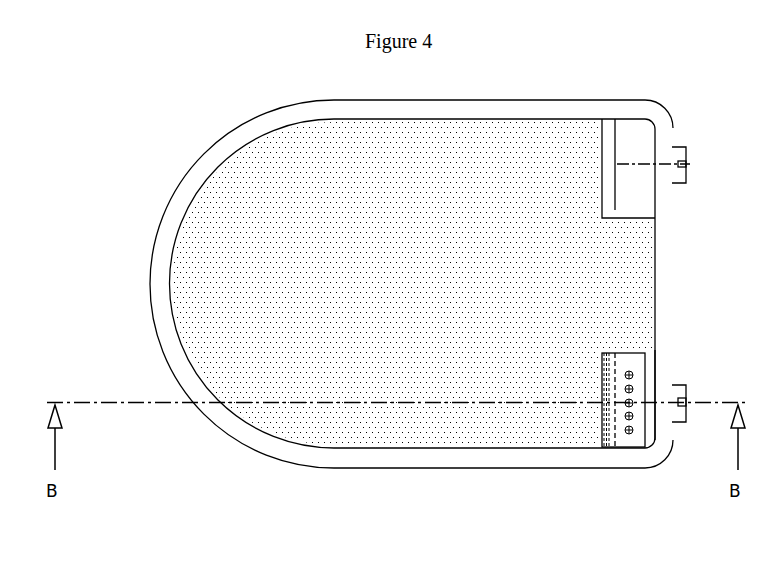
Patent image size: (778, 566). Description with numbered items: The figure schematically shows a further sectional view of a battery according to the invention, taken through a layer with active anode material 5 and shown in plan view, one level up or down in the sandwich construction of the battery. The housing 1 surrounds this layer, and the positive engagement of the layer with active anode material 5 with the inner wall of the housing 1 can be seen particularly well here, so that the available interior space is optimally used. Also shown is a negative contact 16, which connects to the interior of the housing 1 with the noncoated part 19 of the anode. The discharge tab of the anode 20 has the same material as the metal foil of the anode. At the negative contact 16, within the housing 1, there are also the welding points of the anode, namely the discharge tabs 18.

The housing 1 is at (208, 162).
The layer with active anode material 5 is at (243, 258).
The negative contact 16 is at (680, 390).
The discharge tabs 18 is at (628, 433).
The noncoated part of the anode 19 is at (620, 438).
The discharge tab of the anode 20 is at (648, 433).